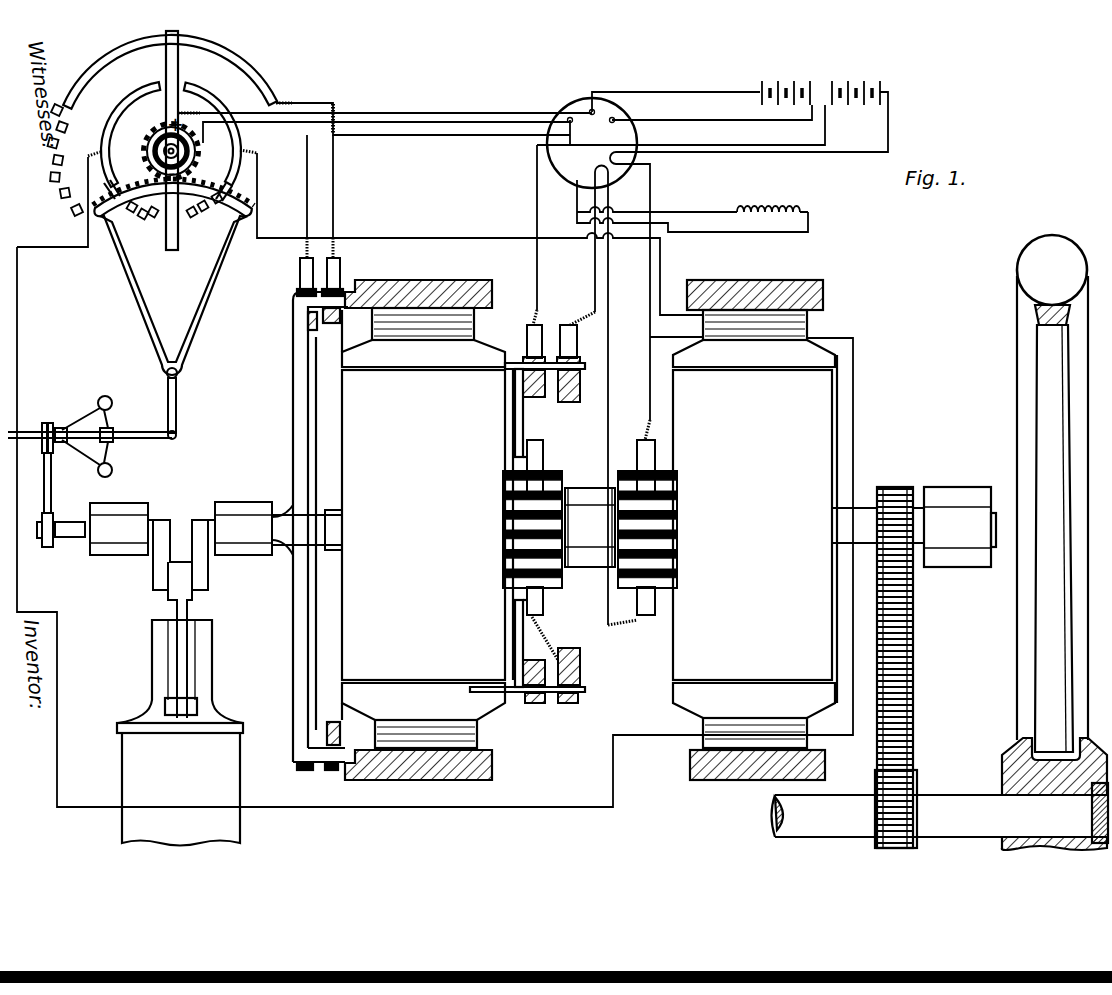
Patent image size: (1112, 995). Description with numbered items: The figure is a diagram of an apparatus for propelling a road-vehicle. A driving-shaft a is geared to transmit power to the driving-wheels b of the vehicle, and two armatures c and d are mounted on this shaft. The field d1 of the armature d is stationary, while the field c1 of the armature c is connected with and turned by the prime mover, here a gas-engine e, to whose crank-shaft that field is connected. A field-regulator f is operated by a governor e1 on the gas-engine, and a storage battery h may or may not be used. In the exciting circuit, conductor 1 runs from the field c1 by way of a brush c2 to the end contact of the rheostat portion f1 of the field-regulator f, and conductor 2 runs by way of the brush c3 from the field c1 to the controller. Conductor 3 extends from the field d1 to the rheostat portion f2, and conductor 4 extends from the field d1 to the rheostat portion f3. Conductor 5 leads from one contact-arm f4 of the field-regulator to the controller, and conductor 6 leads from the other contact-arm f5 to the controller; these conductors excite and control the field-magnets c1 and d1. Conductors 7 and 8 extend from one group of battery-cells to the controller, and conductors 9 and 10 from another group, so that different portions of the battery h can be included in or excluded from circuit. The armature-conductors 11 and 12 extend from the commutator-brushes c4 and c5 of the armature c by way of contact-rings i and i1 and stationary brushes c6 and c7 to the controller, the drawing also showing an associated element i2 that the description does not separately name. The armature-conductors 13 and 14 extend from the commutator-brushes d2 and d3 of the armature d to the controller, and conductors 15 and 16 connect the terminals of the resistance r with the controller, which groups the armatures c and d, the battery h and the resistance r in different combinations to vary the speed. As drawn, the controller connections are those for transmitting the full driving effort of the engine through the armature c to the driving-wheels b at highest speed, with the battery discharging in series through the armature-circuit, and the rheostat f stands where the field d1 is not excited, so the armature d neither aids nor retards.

The field-regulator f is at (175, 72).
The rheostat portion f1 is at (72, 213).
The rheostat portion f2 is at (232, 211).
The rheostat portion f3 is at (116, 123).
The contact-arm f4 is at (172, 250).
The contact-arm f5 is at (172, 79).
The conductor 1 is at (334, 203).
The conductor 2 is at (307, 208).
The conductor 3 is at (257, 237).
The conductor 4 is at (580, 807).
The conductor 5 is at (496, 141).
The conductor 6 is at (442, 113).
The conductor 7 is at (676, 89).
The conductor 8 is at (758, 121).
The conductor 9 is at (826, 138).
The conductor 10 is at (749, 266).
The armature-conductor 11 is at (537, 228).
The armature-conductor 12 is at (595, 284).
The armature-conductor 13 is at (609, 397).
The armature-conductor 14 is at (676, 339).
The conductor 15 is at (703, 211).
The conductor 16 is at (805, 233).
The storage battery h is at (846, 82).
The resistance r is at (770, 209).
The armature c is at (463, 528).
The field c1 is at (428, 284).
The brush c2 is at (340, 277).
The brush c3 is at (300, 274).
The commutator-brush c4 is at (543, 470).
The commutator-brush c5 is at (545, 610).
The stationary brush c6 is at (527, 339).
The stationary brush c7 is at (577, 344).
The contact-ring i is at (523, 392).
The contact-ring i1 is at (580, 700).
The brush block i2 is at (570, 402).
The armature d is at (755, 529).
The field d1 is at (704, 795).
The commutator-brush d2 is at (638, 448).
The commutator-brush d3 is at (651, 614).
The driving-shaft a is at (300, 556).
The driving-wheels b is at (1030, 352).
The gas-engine e is at (205, 687).
The governor e1 is at (115, 446).